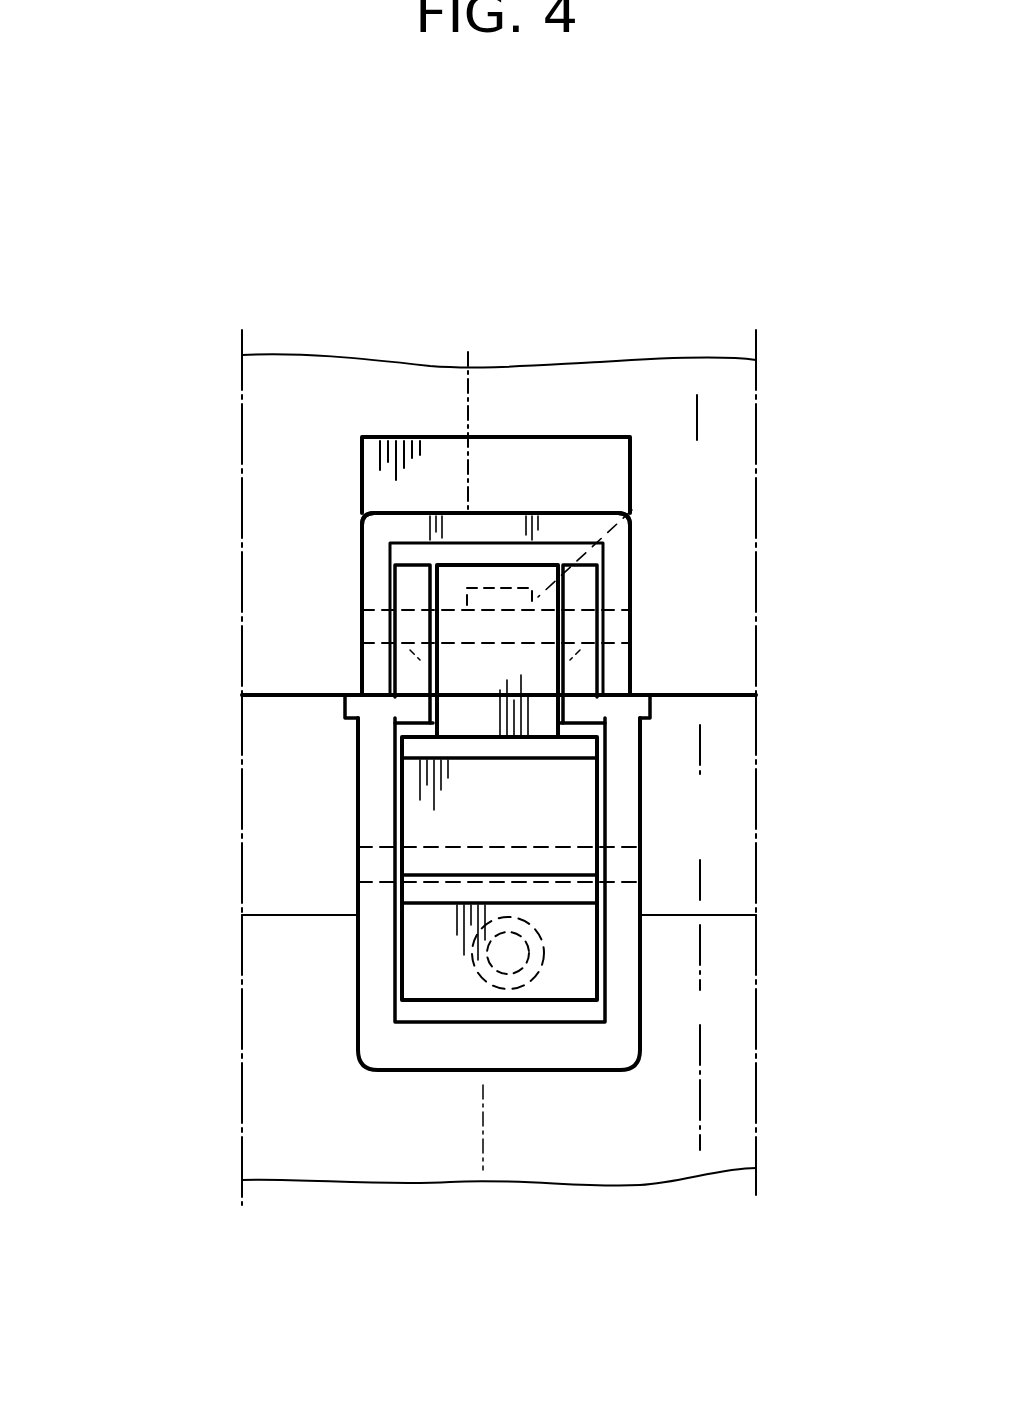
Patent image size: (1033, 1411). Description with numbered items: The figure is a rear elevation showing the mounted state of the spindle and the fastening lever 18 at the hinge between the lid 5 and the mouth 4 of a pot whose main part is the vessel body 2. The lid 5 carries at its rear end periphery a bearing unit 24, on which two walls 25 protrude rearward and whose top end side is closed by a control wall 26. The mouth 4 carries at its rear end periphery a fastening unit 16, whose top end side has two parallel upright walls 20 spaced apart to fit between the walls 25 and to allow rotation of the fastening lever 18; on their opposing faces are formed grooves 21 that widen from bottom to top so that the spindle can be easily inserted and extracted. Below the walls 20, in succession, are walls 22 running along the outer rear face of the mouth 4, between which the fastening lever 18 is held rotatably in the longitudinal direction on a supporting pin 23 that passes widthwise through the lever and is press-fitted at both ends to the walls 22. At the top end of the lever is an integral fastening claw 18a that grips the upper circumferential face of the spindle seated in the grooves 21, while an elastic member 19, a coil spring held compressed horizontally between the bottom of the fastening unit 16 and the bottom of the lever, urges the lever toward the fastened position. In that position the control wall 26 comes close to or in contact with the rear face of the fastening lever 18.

The vessel body 2 is at (335, 1145).
The mouth 4 is at (727, 735).
The lid 5 is at (316, 385).
The fastening unit 16 is at (678, 1007).
The fastening lever 18 is at (548, 815).
The fastening claw 18a is at (452, 600).
The elastic member 19 is at (470, 940).
The walls 20 is at (410, 592).
The grooves 21 is at (378, 670).
The walls 22 is at (597, 943).
The supporting pin 23 is at (455, 855).
The bearing unit 24 is at (553, 418).
The walls 25 is at (363, 514).
The control wall 26 is at (496, 490).